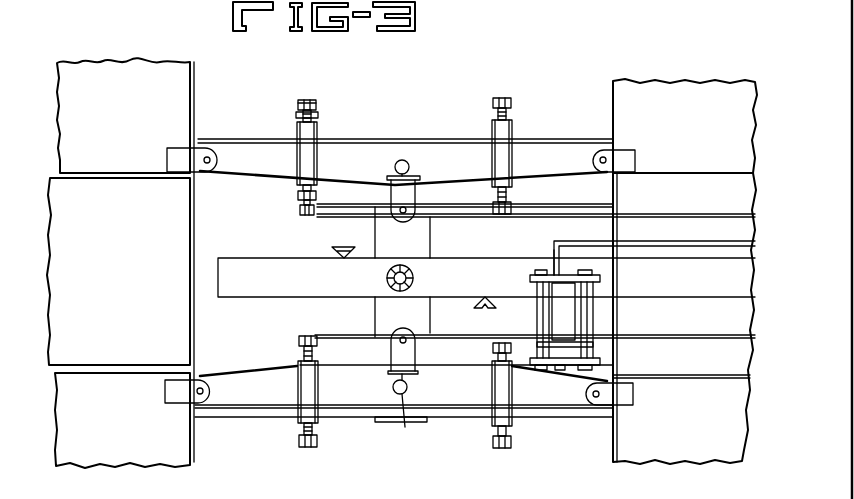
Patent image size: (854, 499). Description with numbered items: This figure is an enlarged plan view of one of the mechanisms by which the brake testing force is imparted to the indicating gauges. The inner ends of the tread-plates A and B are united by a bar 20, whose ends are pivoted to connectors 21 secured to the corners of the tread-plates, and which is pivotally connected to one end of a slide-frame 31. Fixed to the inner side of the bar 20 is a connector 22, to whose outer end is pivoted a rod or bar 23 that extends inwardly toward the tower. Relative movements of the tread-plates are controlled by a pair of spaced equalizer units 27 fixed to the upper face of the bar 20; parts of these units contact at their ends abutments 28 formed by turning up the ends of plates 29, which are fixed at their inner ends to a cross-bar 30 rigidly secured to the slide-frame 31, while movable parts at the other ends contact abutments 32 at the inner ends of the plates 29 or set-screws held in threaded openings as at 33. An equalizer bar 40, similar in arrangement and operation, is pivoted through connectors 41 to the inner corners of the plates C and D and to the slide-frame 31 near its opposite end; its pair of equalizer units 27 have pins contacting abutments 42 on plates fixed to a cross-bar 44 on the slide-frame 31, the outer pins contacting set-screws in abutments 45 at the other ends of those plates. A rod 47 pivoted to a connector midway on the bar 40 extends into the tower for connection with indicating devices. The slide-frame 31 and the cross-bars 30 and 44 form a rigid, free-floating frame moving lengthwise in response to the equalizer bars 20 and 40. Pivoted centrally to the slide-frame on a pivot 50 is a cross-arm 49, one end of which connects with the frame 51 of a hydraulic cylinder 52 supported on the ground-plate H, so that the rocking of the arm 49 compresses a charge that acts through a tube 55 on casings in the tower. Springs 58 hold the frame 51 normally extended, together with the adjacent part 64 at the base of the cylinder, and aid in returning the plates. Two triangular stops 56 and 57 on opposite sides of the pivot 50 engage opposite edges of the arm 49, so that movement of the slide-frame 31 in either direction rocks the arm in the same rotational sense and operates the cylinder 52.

The bar 20 is at (367, 165).
The connectors 21 is at (190, 148).
The connector 22 is at (400, 197).
The rod or bar 23 is at (669, 213).
The equalizer units 27 is at (318, 122).
The abutments 28 is at (297, 208).
The plates 29 is at (297, 117).
The cross-bar 30 is at (338, 202).
The slide-frame 31 is at (422, 243).
The abutments 32 is at (320, 100).
The set-screws 33 is at (307, 100).
The equalizer bar 40 is at (463, 393).
The lower end bracket 41 is at (182, 390).
The abutments 42 is at (298, 343).
The cross-bar 44 is at (350, 347).
The abutments 45 is at (298, 430).
The rod 47 is at (652, 335).
The cross-arm 49 is at (480, 272).
The pivot 50 is at (415, 278).
The frame 51 is at (555, 268).
The hydraulic cylinder 52 is at (572, 317).
The tube 55 is at (620, 243).
The triangular stop 56 is at (345, 250).
The triangular stop 57 is at (483, 306).
The springs 58 is at (540, 353).
The cross bar 64 is at (560, 358).